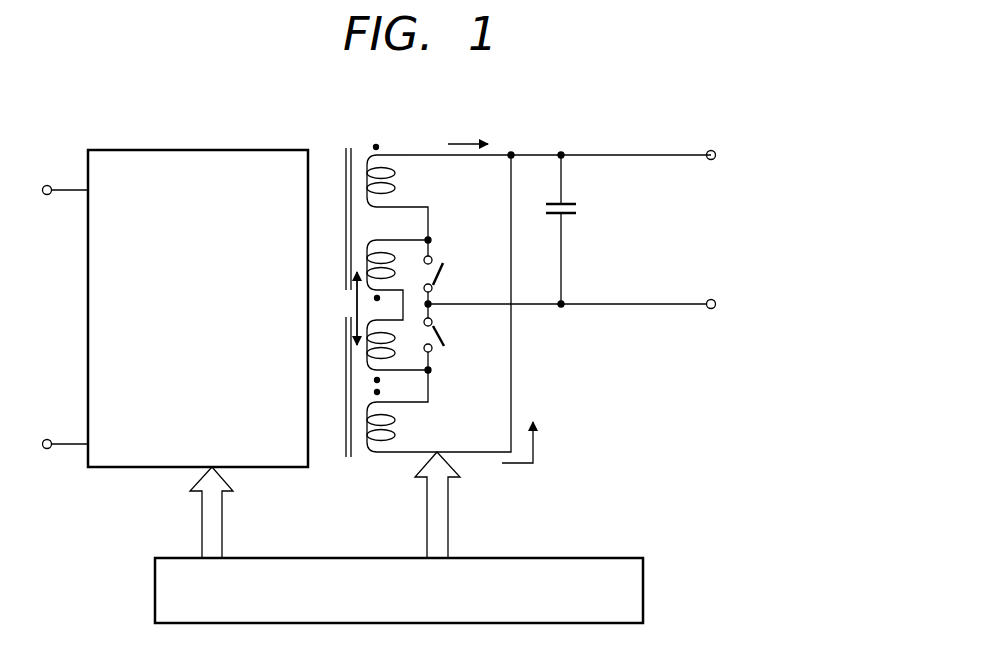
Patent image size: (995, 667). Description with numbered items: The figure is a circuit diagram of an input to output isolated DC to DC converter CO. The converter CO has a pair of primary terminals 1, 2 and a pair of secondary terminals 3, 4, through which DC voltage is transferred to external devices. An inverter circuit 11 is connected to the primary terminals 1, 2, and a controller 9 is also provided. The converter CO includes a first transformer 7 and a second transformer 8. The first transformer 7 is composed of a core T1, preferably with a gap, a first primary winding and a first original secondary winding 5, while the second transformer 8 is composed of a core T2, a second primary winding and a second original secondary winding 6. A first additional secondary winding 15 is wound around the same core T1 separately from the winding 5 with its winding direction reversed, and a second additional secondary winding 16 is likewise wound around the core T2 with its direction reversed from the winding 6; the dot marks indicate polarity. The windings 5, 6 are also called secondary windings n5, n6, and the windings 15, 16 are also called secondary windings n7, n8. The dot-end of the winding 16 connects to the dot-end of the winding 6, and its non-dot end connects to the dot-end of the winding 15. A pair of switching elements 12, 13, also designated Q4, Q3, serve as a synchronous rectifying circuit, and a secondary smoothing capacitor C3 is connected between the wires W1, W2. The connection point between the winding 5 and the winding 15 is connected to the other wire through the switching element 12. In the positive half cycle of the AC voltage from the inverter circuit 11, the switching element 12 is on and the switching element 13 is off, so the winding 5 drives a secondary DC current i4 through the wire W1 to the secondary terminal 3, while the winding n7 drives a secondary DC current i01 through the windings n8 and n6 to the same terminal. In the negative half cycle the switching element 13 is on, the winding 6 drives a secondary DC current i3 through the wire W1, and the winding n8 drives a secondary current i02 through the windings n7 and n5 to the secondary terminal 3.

The primary terminal 1 is at (70, 189).
The primary terminal 2 is at (65, 447).
The secondary terminal 3 is at (683, 155).
The secondary terminal 4 is at (665, 305).
The first original secondary winding 5 is at (539, 176).
The second original secondary winding 6 is at (439, 324).
The first transformer 7 is at (366, 147).
The second transformer 8 is at (325, 458).
The controller 9 is at (643, 568).
The inverter circuit 11 is at (229, 150).
The switching element 12 is at (447, 262).
The switching element 13 is at (446, 350).
The first additional secondary winding 15 is at (402, 248).
The second additional secondary winding 16 is at (395, 358).
The core T1 is at (346, 146).
The core T2 is at (348, 460).
The secondary winding n5 is at (400, 158).
The secondary winding n6 is at (394, 442).
The secondary winding n7 is at (397, 280).
The secondary winding n8 is at (397, 361).
The switching element Q3 is at (451, 338).
The switching element Q4 is at (450, 272).
The secondary smoothing capacitor C3 is at (576, 229).
The wire W1 is at (607, 155).
The wire W2 is at (609, 305).
The secondary DC current i01 is at (354, 340).
The secondary current i02 is at (356, 268).
The secondary DC current i3 is at (529, 442).
The secondary DC current i4 is at (468, 130).
The DC to DC converter CO is at (692, 614).